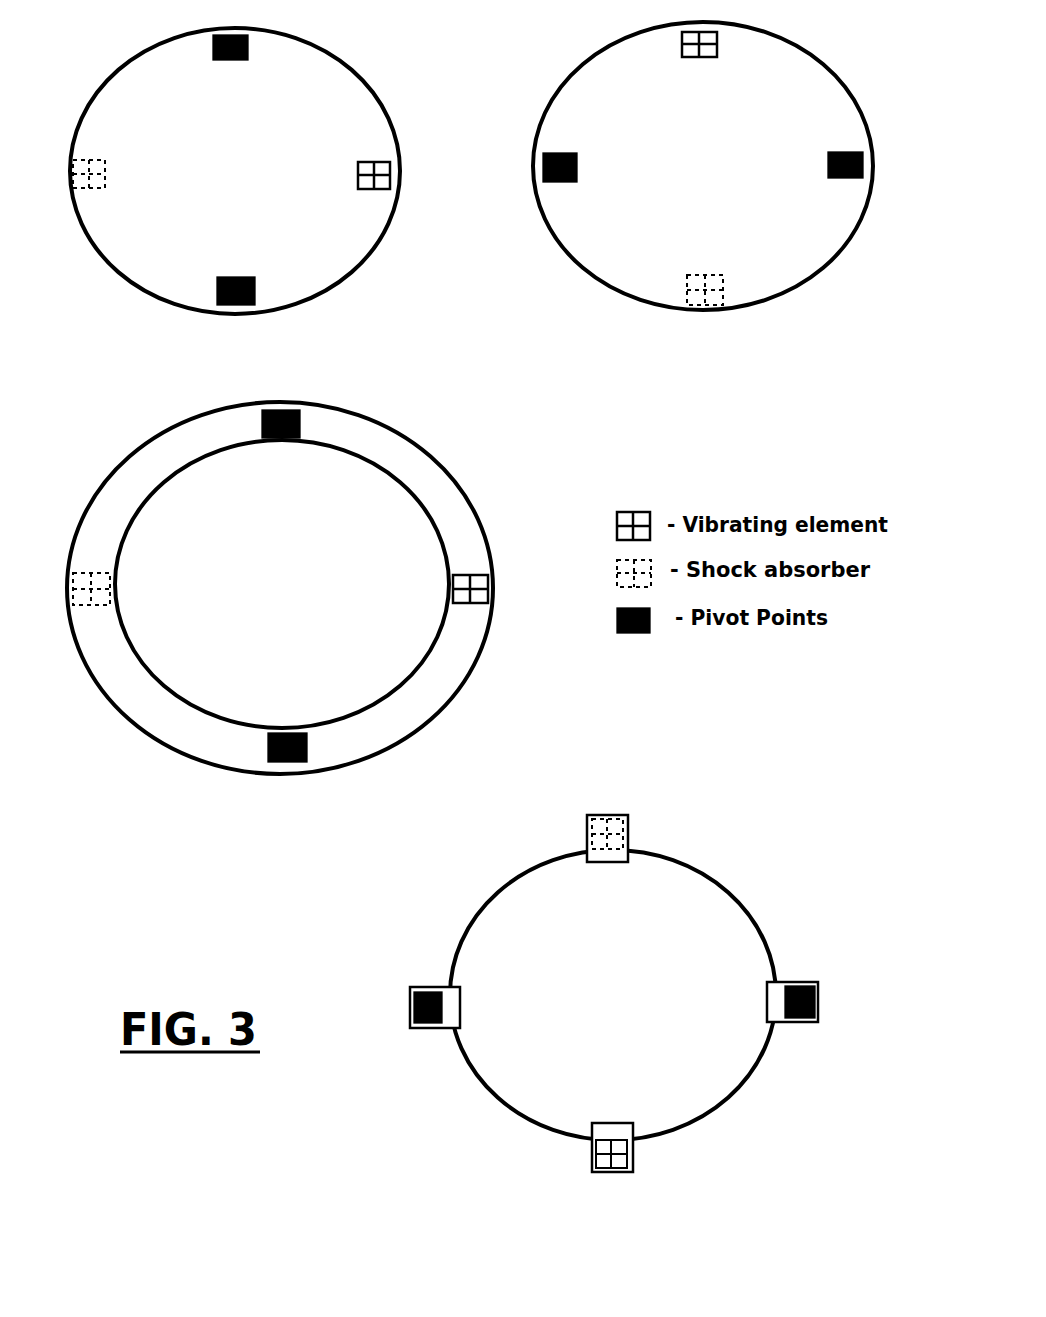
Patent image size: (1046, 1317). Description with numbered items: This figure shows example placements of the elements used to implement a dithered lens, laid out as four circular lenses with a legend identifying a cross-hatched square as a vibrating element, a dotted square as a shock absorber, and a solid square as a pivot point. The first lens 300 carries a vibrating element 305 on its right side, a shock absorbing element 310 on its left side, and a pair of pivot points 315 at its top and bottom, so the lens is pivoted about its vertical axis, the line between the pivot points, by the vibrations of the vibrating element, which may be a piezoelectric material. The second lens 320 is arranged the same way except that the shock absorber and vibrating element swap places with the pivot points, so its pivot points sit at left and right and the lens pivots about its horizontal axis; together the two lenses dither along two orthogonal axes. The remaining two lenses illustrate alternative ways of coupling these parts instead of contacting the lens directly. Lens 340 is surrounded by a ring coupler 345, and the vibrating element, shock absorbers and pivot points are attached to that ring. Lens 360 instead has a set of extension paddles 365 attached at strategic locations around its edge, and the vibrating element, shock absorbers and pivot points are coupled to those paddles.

The lens 300 is at (297, 217).
The vibrating element 305 is at (368, 155).
The shock absorber 310 is at (88, 153).
The pivot points 315 is at (230, 73).
The lens 320 is at (777, 217).
The lens 340 is at (336, 588).
The ring coupler 345 is at (448, 507).
The lens 360 is at (687, 1062).
The extension paddles 365 is at (773, 984).